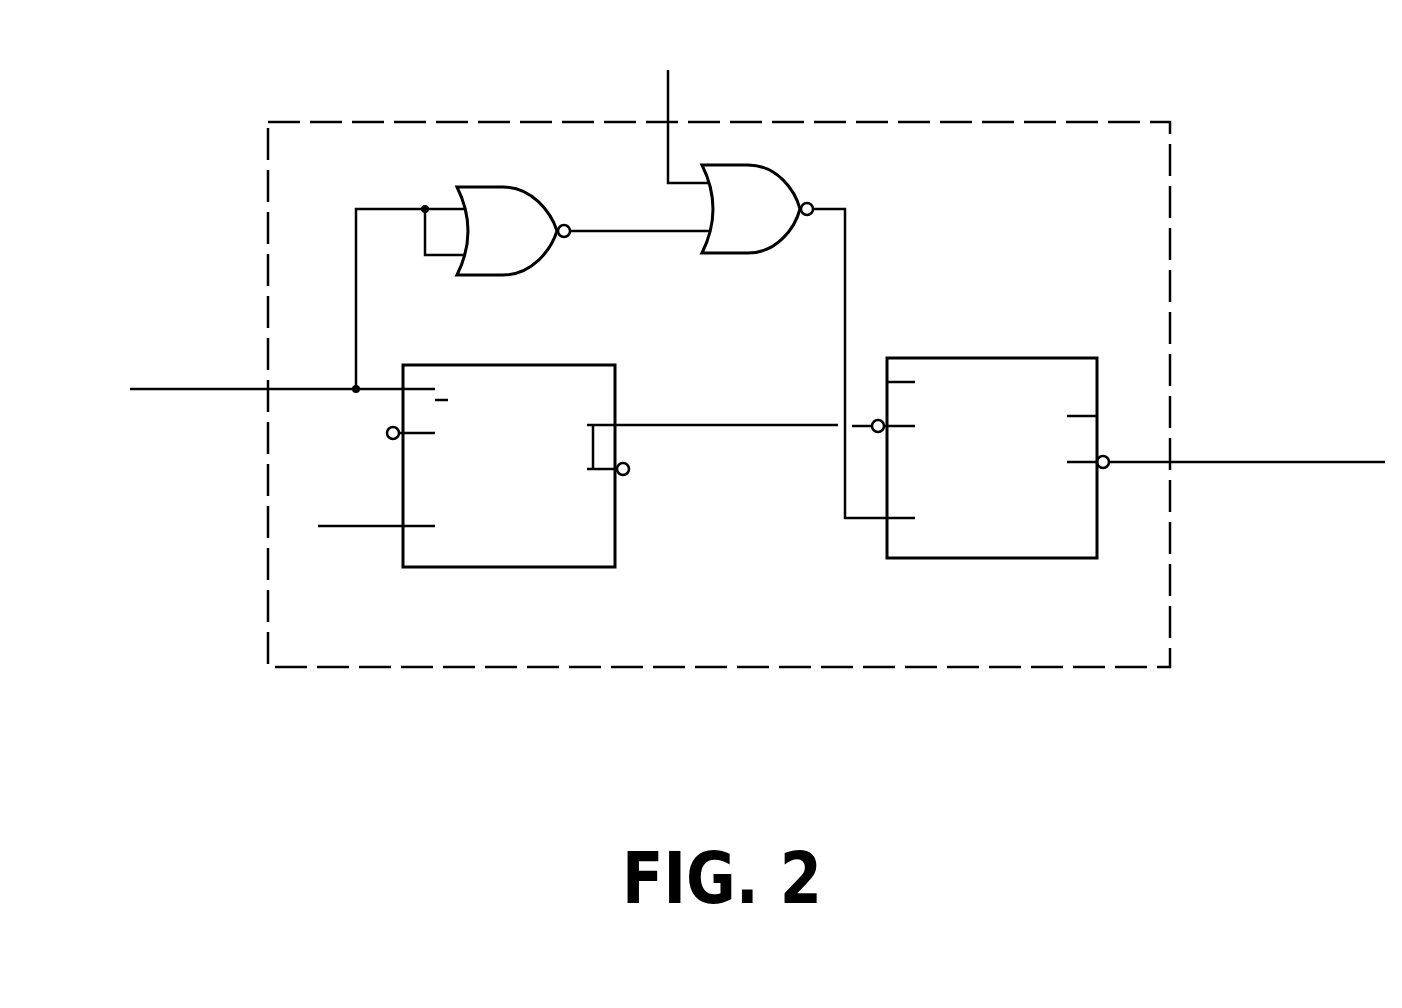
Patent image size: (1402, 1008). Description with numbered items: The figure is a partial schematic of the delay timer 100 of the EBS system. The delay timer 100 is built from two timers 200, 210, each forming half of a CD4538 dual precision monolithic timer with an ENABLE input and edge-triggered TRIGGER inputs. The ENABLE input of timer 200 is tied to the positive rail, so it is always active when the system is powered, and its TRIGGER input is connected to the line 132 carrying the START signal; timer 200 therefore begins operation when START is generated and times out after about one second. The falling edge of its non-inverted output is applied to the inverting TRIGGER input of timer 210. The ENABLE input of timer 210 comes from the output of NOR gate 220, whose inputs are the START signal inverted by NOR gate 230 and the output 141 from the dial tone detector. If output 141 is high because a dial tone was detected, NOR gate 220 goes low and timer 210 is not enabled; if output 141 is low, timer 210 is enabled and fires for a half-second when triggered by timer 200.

The delay timer 100 is at (719, 394).
The line 132 is at (269, 308).
The output from the dial tone detector 141 is at (676, 109).
The timer 200 is at (575, 466).
The timer 210 is at (1118, 458).
The NOR gate 220 is at (748, 228).
The NOR gate 230 is at (513, 247).